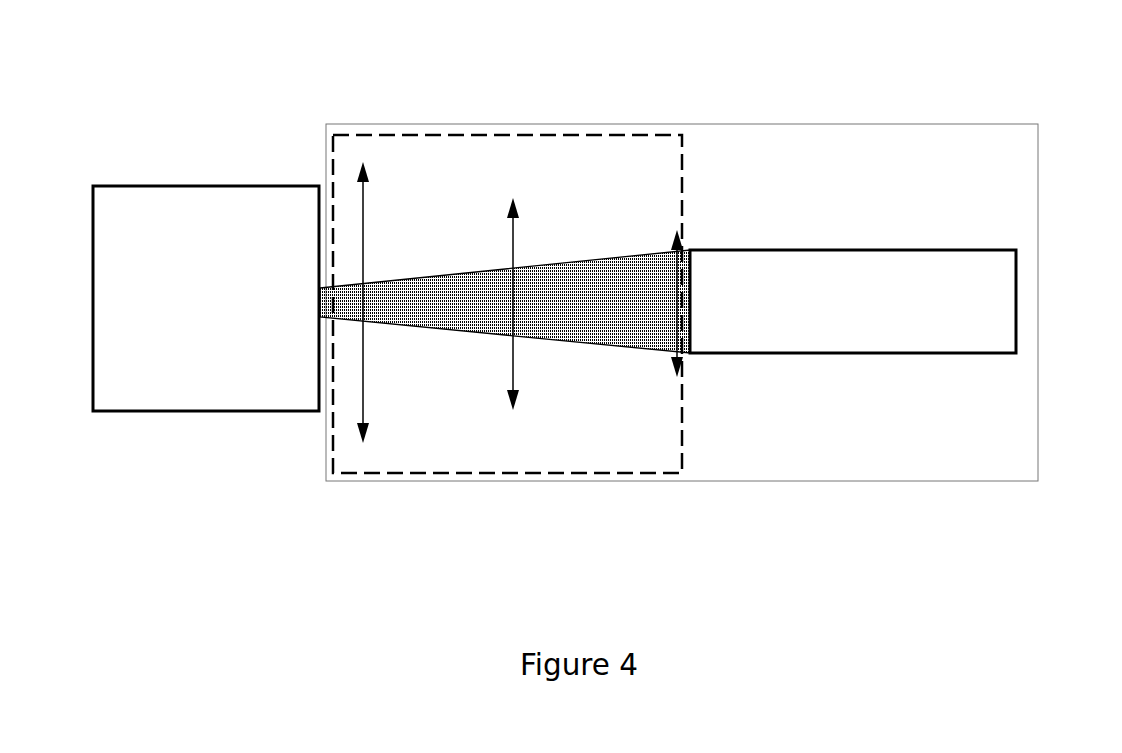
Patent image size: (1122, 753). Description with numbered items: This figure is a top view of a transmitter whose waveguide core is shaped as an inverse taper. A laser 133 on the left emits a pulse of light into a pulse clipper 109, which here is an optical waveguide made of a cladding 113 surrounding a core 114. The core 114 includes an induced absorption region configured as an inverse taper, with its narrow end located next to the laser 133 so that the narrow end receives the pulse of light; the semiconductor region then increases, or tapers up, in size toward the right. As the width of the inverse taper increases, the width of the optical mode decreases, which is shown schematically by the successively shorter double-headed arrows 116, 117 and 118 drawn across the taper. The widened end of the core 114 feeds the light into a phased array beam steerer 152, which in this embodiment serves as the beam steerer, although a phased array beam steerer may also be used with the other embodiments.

The pulse clipper 109 is at (570, 143).
The cladding 113 is at (420, 162).
The waveguide core 114 is at (590, 259).
The optical mode width 116 is at (363, 350).
The optical mode width 117 is at (513, 350).
The optical mode width 118 is at (673, 327).
The laser 133 is at (136, 373).
The phased array beam steerer 152 is at (1000, 293).